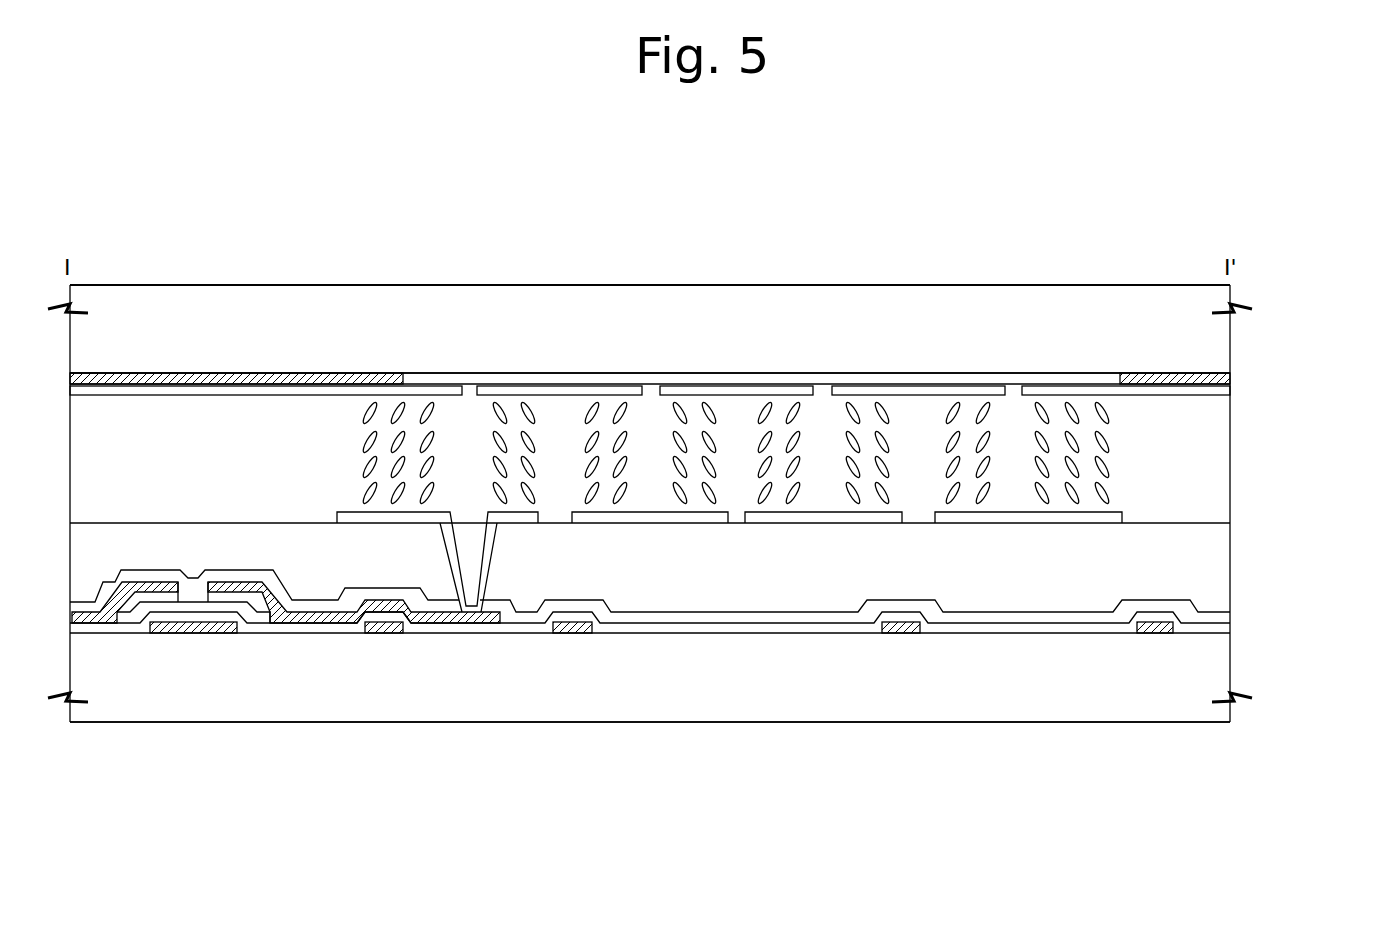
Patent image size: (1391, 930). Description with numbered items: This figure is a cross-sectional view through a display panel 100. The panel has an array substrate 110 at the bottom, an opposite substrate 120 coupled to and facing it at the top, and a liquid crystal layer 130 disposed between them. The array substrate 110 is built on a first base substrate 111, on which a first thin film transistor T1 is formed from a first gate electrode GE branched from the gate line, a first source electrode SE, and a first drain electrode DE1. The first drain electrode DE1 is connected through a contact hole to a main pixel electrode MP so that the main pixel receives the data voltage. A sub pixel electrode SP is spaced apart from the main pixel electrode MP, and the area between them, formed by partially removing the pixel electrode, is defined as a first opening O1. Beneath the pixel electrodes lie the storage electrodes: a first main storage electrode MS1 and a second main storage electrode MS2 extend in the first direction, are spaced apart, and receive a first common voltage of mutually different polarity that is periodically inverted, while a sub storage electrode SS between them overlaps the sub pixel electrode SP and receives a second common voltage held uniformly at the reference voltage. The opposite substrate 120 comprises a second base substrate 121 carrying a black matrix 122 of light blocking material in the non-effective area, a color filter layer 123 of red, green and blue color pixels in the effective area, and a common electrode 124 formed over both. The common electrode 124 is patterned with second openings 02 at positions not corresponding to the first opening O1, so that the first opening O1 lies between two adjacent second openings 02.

The display panel 100 is at (648, 204).
The second opening 02 is at (822, 388).
The opposite substrate 120 is at (1318, 286).
The second base substrate 121 is at (1218, 333).
The black matrix 122 is at (1220, 378).
The color filter layer 123 is at (1090, 377).
The common electrode 124 is at (1187, 390).
The liquid crystal layer 130 is at (1105, 467).
The array substrate 110 is at (1318, 524).
The first base substrate 111 is at (1218, 665).
The sub pixel electrode SP is at (803, 512).
The main pixel electrode MP is at (422, 523).
The first opening O1 is at (918, 522).
The first thin film transistor T1 is at (318, 782).
The first gate electrode GE is at (197, 633).
The first source electrode SE is at (98, 623).
The first drain electrode DE1 is at (292, 612).
The second main storage electrode MS2 is at (383, 633).
The sub storage electrode SS is at (567, 633).
The first main storage electrode MS1 is at (1153, 633).